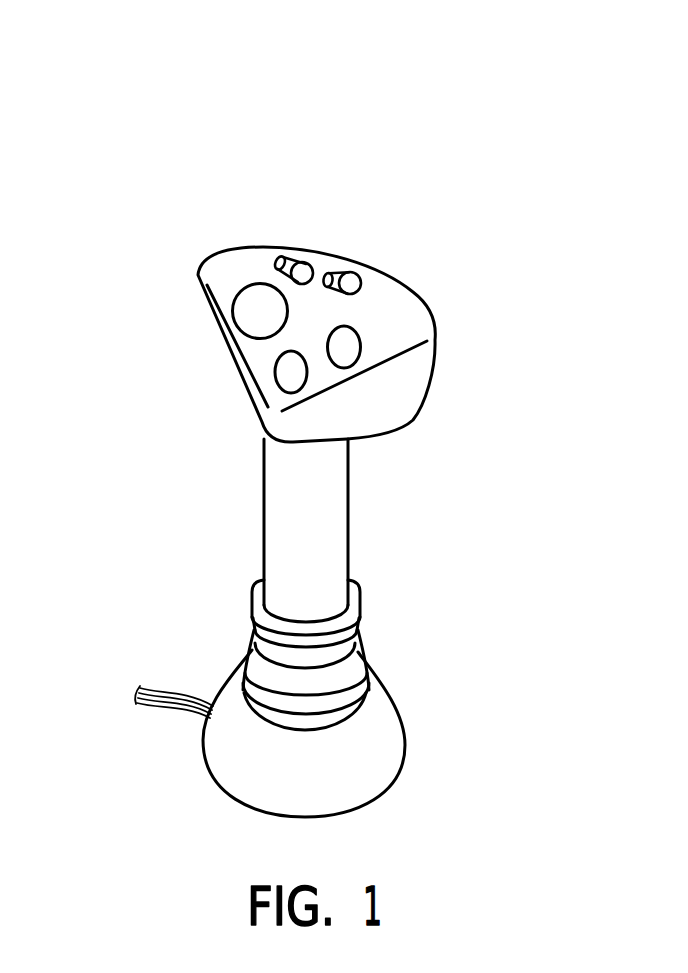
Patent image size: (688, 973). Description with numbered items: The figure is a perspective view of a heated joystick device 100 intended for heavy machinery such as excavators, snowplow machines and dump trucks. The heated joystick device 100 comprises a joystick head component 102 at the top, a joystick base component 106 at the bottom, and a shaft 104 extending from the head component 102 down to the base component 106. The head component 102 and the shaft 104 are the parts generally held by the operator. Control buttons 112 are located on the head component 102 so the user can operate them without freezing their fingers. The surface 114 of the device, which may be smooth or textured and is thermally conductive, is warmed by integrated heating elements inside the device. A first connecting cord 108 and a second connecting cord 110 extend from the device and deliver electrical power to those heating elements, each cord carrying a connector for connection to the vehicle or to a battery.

The heated joystick device 100 is at (192, 162).
The joystick head component 102 is at (423, 332).
The shaft 104 is at (310, 517).
The joystick base component 106 is at (347, 662).
The first connecting cord 108 is at (138, 691).
The second connecting cord 110 is at (138, 699).
The control buttons 112 is at (340, 347).
The surface 114 is at (310, 313).